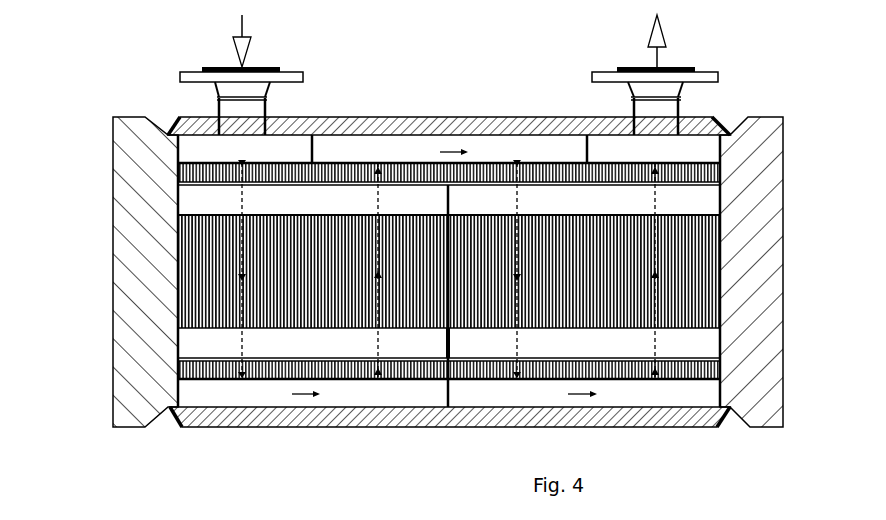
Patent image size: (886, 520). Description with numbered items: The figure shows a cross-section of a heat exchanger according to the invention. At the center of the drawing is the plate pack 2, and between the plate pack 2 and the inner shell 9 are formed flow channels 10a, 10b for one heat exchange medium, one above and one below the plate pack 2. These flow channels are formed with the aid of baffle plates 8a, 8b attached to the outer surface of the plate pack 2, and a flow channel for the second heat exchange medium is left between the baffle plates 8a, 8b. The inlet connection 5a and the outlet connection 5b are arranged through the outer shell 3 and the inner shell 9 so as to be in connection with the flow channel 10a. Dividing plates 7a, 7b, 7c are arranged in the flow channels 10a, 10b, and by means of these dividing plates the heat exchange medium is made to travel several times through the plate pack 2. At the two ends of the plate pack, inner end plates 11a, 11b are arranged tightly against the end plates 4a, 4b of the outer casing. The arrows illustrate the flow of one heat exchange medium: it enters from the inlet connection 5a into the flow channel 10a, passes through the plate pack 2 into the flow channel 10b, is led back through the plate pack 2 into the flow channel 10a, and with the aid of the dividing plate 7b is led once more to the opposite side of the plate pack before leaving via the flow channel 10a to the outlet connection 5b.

The plate pack 2 is at (688, 265).
The outer shell 3 is at (468, 118).
The end plate of the outer casing 4a is at (128, 180).
The end plate of the outer casing 4b is at (762, 178).
The inlet connection 5a is at (250, 87).
The outlet connection 5b is at (673, 87).
The dividing plate 7a is at (313, 153).
The dividing plate 7b is at (586, 157).
The dividing plate 7c is at (447, 390).
The baffle plate 8a is at (193, 341).
The baffle plate 8b is at (193, 197).
The inner shell 9 is at (403, 134).
The flow channel 10a is at (207, 153).
The flow channel 10b is at (207, 393).
The inner end plate 11a is at (176, 312).
The inner end plate 11b is at (722, 288).